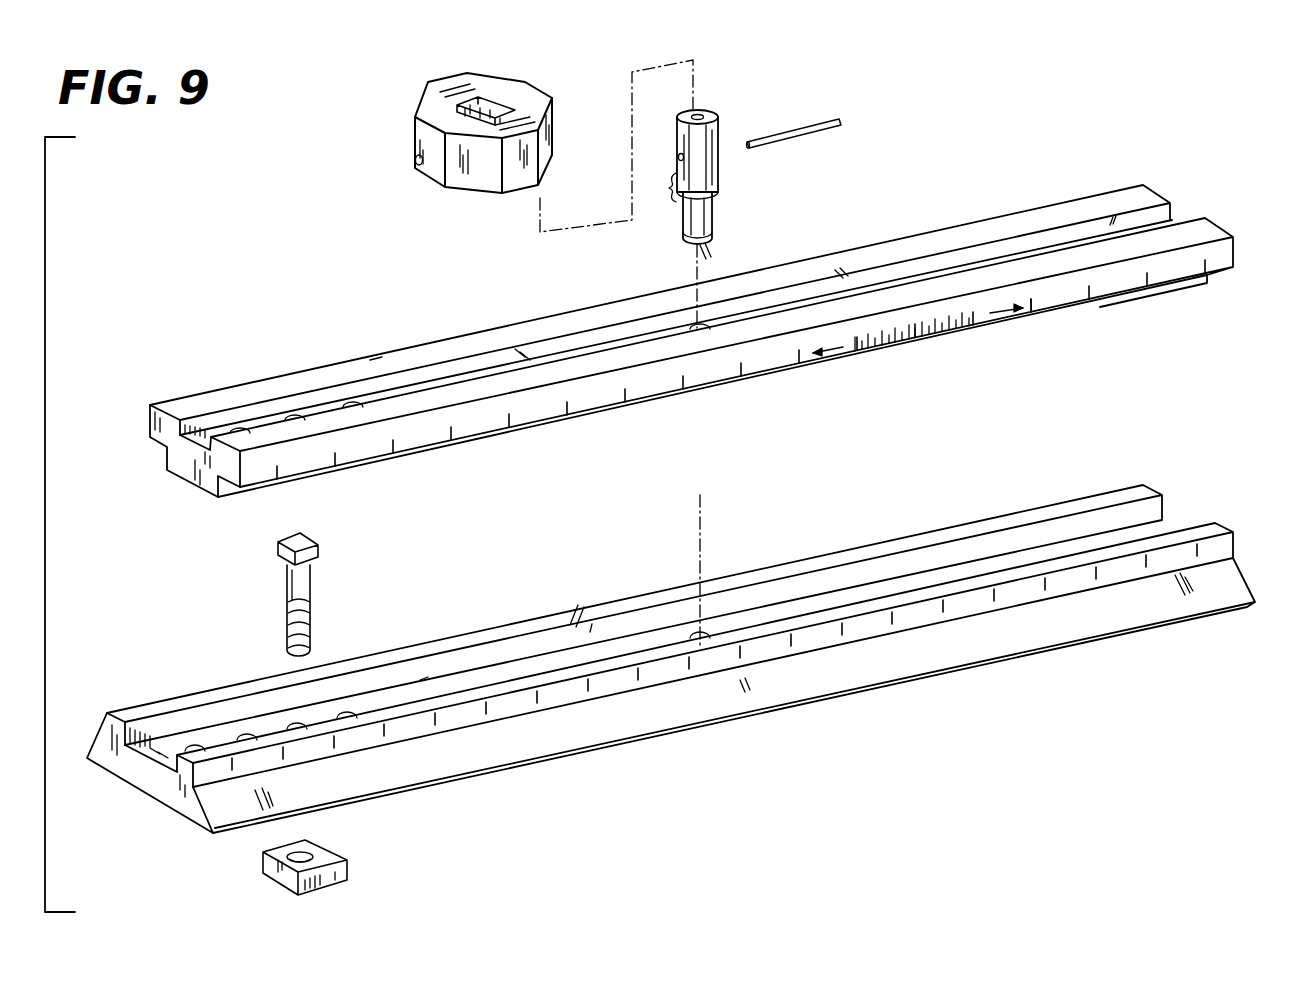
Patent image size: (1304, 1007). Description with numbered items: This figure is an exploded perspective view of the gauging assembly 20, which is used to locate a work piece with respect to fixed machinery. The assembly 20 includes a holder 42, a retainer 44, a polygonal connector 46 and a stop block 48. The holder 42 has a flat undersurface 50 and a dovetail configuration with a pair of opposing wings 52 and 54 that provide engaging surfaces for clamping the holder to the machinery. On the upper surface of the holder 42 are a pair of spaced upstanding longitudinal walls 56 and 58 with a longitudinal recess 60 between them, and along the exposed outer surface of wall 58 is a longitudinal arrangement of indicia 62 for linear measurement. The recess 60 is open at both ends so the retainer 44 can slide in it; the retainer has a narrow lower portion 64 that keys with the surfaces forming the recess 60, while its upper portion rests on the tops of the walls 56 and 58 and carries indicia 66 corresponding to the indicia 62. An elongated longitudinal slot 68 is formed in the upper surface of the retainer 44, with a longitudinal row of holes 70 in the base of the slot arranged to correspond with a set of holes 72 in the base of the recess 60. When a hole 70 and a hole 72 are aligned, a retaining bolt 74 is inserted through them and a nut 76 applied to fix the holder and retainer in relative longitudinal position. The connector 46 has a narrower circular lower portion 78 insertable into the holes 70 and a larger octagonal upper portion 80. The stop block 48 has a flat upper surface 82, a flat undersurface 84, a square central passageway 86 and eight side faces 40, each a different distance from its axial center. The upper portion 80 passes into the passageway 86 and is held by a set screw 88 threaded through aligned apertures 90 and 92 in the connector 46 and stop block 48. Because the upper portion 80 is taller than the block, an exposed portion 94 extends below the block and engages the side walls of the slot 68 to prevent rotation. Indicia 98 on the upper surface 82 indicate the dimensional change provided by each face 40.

The gauging assembly 20 is at (1068, 146).
The side faces 40 is at (517, 190).
The holder 42 is at (665, 681).
The retainer 44 is at (691, 362).
The polygonal connector 46 is at (712, 162).
The stop block 48 is at (389, 179).
The flat undersurface 50 is at (698, 738).
The wing 52 is at (98, 742).
The wing 54 is at (208, 822).
The longitudinal wall 56 is at (500, 633).
The longitudinal wall 58 is at (572, 672).
The longitudinal recess 60 is at (455, 665).
The indicia 62 is at (800, 628).
The narrow lower portion 64 is at (200, 470).
The indicia 66 is at (1037, 320).
The longitudinal slot 68 is at (268, 420).
The holes 70 is at (700, 328).
The holes 72 is at (292, 722).
The retaining bolt 74 is at (314, 594).
The nut 76 is at (350, 872).
The lower portion 78 is at (714, 217).
The upper portion 80 is at (716, 130).
The flat upper surface 82 is at (428, 100).
The flat undersurface 84 is at (470, 195).
The square central passageway 86 is at (487, 100).
The set screw 88 is at (830, 125).
The aperture 90 is at (678, 158).
The aperture 92 is at (416, 166).
The exposed portion 94 is at (670, 182).
The indicia 98 is at (465, 88).